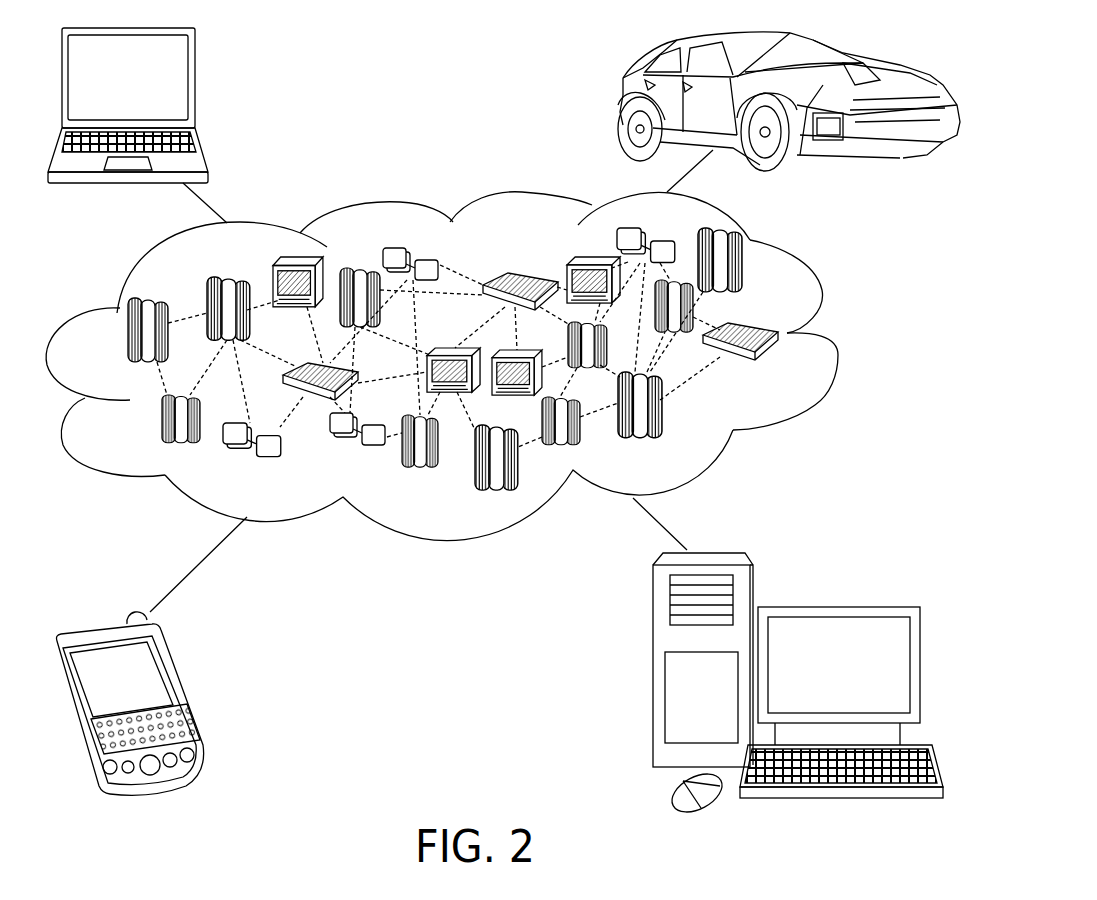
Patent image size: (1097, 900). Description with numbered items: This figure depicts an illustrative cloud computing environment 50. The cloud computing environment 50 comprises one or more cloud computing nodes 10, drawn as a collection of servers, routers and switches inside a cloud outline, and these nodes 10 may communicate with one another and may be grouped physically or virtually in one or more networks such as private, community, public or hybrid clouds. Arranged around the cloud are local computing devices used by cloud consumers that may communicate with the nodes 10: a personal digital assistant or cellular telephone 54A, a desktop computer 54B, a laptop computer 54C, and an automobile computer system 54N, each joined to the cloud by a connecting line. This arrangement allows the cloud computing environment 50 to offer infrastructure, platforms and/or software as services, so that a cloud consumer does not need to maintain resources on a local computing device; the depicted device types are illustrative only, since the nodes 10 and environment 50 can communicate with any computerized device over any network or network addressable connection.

The cloud computing environment 50 is at (837, 338).
The cloud computing nodes 10 is at (778, 365).
The personal digital assistant (PDA) or cellular telephone 54A is at (187, 688).
The desktop computer 54B is at (837, 605).
The laptop computer 54C is at (196, 87).
The automobile computer system 54N is at (620, 100).